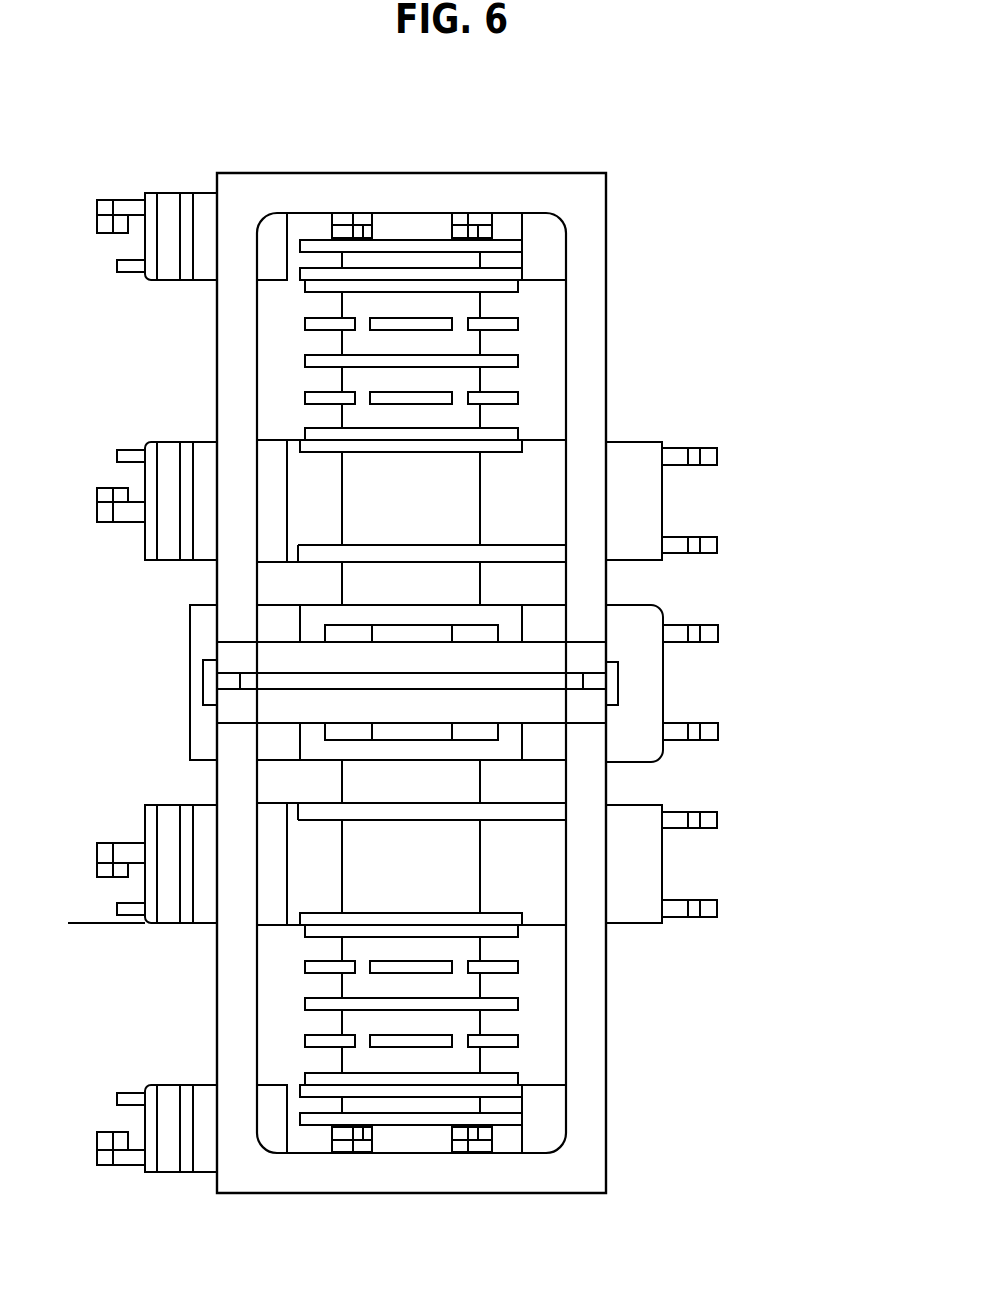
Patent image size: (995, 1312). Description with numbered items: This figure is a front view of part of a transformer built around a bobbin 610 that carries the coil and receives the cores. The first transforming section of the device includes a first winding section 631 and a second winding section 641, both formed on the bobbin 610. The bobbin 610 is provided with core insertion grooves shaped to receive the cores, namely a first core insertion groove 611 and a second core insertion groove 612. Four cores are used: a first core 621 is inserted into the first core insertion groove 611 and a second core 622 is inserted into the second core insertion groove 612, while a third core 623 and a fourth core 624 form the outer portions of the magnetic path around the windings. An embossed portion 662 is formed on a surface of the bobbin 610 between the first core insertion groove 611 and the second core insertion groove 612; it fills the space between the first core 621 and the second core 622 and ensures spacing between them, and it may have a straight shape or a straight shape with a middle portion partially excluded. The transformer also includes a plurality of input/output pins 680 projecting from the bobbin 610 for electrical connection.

The third core 623 is at (508, 188).
The fourth core 624 is at (587, 1159).
The bobbin 610 is at (510, 300).
The second winding section 641 is at (460, 380).
The first winding section 631 is at (460, 582).
The input/output pins 680 is at (718, 455).
The first core 621 is at (577, 653).
The second core 622 is at (590, 712).
The first core insertion groove 611 is at (628, 665).
The second core insertion groove 612 is at (628, 697).
The embossed portion 662 is at (255, 682).